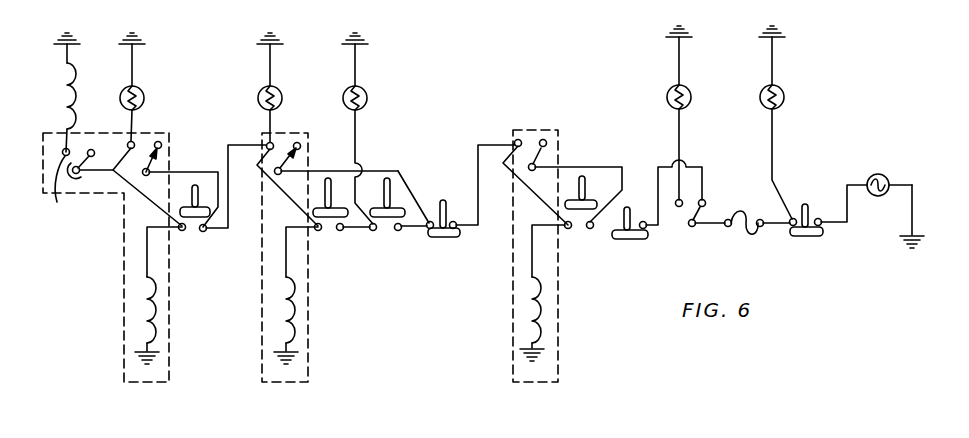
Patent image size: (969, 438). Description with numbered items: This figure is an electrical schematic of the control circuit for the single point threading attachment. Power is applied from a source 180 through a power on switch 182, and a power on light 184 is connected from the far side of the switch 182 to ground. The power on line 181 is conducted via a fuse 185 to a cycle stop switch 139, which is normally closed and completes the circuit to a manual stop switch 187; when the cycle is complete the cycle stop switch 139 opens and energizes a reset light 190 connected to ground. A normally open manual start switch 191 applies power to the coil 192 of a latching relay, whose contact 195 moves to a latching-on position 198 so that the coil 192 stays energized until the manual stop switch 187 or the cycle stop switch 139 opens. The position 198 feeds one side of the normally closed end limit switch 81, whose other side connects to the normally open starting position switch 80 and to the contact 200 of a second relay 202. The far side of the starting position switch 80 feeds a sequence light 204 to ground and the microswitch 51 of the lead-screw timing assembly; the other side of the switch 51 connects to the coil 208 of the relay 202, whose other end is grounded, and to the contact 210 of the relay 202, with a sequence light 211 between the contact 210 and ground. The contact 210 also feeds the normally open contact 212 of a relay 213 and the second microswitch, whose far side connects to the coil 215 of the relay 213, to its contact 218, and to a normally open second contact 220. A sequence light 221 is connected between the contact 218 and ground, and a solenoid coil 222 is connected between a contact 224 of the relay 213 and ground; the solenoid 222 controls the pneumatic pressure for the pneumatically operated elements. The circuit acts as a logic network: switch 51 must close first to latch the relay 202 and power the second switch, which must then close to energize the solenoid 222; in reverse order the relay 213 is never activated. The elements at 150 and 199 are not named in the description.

The solenoid coil 222 is at (87, 92).
The sequence light 221 is at (145, 98).
The contact of relay 213 218 is at (128, 141).
The normally open contact of relay 213 212 is at (170, 130).
The relay solenoid 150 is at (197, 185).
The normally open second contact 220 is at (92, 172).
The contact of relay 213 224 is at (76, 189).
The relay 213 is at (122, 282).
The coil of relay 213 215 is at (155, 328).
The sequence light 211 is at (258, 98).
The contact of relay 202 210 is at (233, 175).
The contact of second relay 202 200 is at (333, 140).
The second relay 202 is at (263, 287).
The coil of relay 202 208 is at (296, 328).
The sequence light 204 is at (368, 98).
The microswitch 51 is at (331, 185).
The starting limit position switch 80 is at (391, 191).
The end limit switch 81 is at (448, 206).
The latching-on position 198 is at (516, 138).
The relay contact 195 is at (542, 152).
The relay unit (dashed) 199 is at (512, 312).
The relay coil 192 is at (540, 332).
The manual start switch 191 is at (586, 180).
The manual stop switch 187 is at (655, 230).
The cycle stop switch 139 is at (695, 214).
The fuse 185 is at (744, 232).
The reset light 190 is at (667, 96).
The power on light 184 is at (784, 97).
The power on switch 182 is at (798, 203).
The power source 180 is at (878, 174).
The power on line 181 is at (837, 226).